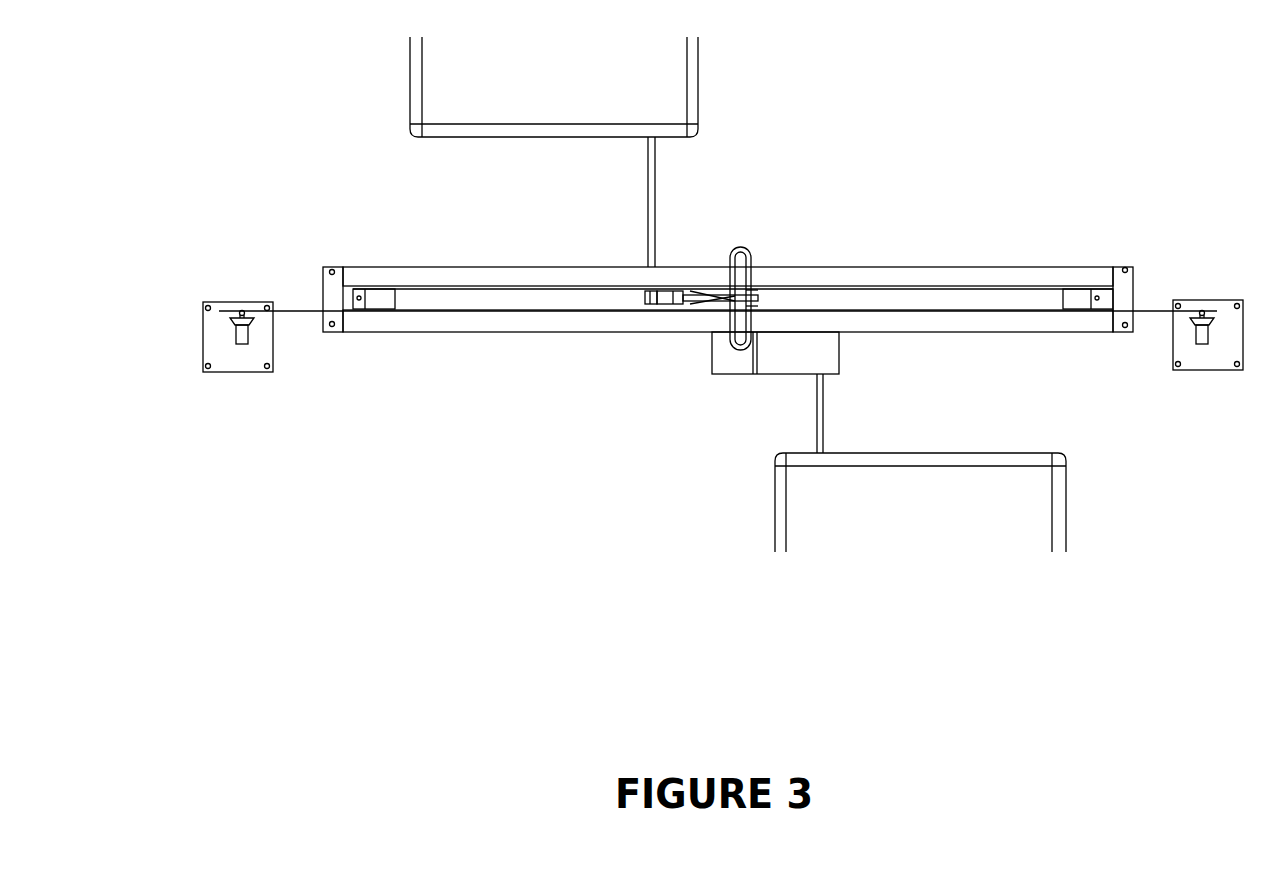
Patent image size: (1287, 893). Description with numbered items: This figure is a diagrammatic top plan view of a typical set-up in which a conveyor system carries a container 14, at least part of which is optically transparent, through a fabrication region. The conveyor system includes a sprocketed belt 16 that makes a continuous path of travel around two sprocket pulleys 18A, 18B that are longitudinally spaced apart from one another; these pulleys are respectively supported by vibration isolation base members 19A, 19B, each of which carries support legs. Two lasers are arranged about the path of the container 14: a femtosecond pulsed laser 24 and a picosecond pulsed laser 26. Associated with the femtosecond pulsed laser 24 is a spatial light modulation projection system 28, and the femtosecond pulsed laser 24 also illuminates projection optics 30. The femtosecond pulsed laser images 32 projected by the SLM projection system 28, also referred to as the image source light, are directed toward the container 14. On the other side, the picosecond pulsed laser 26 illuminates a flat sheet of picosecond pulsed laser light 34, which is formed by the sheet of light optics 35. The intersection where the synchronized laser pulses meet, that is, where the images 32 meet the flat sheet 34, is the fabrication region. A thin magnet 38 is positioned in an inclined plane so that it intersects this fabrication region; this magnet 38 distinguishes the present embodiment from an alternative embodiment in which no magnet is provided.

The container 14 is at (763, 296).
The sprocketed belt 16 is at (305, 312).
The sprocket pulley 18A is at (250, 305).
The sprocket pulley 18B is at (1220, 300).
The vibration isolation base member 19A is at (249, 360).
The vibration isolation base member 19B is at (1208, 353).
The femtosecond pulsed laser 24 is at (1028, 503).
The picosecond pulsed laser 26 is at (433, 95).
The spatial light modulation projection system 28 is at (727, 360).
The projection optics 30 is at (757, 293).
The femtosecond pulsed laser images 32 is at (750, 295).
The flat sheet of picosecond pulsed laser light 34 is at (700, 283).
The sheet of light optics 35 is at (718, 302).
The thin magnet 38 is at (706, 306).